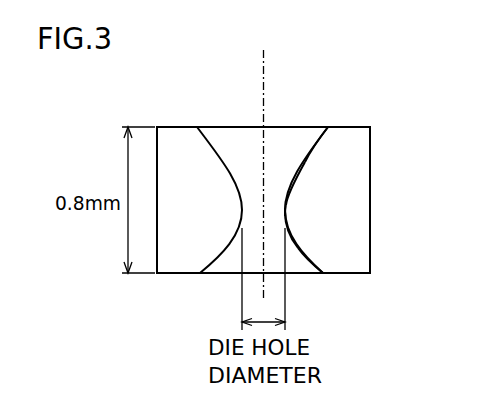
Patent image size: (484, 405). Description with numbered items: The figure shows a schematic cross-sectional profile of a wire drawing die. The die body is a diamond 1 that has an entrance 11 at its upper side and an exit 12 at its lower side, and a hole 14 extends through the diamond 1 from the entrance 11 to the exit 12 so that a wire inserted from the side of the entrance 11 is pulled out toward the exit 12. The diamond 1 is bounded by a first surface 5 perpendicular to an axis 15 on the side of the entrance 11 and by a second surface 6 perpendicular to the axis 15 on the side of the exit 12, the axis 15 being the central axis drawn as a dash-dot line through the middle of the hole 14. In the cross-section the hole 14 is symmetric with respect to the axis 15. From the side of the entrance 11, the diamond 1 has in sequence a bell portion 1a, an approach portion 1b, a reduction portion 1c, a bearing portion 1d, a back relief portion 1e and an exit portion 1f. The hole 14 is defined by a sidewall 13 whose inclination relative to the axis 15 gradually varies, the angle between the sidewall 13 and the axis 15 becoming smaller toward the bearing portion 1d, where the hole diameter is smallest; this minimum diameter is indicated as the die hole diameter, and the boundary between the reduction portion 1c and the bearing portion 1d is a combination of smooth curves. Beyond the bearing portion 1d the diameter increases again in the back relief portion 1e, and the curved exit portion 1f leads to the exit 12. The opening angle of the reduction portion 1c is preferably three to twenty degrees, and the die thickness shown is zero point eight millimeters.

The diamond 1 is at (304, 116).
The bell portion 1a is at (330, 138).
The approach portion 1b is at (305, 165).
The reduction portion 1c is at (287, 200).
The bearing portion 1d is at (286, 210).
The back relief portion 1e is at (287, 218).
The exit portion 1f is at (305, 252).
The first surface 5 is at (347, 127).
The second surface 6 is at (177, 277).
The entrance 11 is at (207, 140).
The exit 12 is at (218, 277).
The sidewall 13 is at (225, 140).
The hole 14 is at (275, 140).
The axis 15 is at (261, 94).